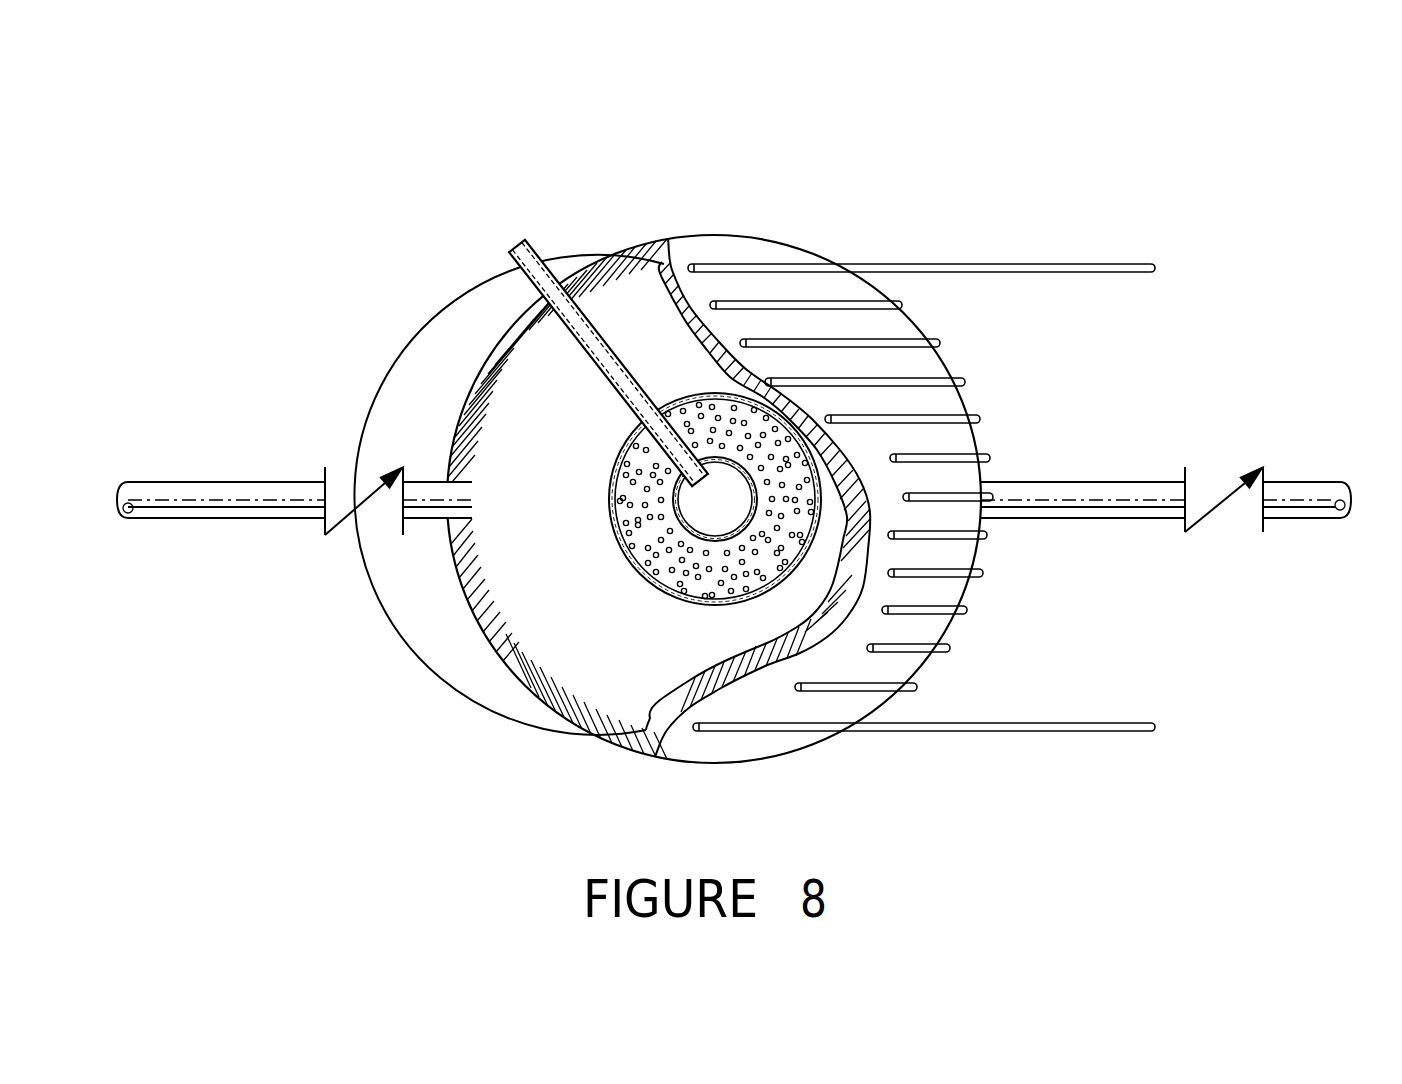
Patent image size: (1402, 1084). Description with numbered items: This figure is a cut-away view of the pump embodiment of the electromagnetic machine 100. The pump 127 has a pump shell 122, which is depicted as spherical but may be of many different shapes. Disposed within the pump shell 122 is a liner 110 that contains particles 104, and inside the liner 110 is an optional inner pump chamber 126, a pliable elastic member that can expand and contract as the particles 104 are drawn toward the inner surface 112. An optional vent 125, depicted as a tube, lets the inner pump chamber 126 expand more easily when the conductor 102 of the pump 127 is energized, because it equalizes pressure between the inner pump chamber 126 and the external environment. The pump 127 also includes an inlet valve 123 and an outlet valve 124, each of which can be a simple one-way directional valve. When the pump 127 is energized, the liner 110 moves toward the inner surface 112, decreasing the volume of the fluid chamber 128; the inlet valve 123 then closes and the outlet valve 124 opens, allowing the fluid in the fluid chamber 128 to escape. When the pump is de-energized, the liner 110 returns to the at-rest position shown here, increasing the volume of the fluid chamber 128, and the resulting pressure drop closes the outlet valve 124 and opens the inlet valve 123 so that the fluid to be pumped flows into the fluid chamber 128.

The electromagnetic machine 100 is at (1002, 162).
The conductor 102 is at (930, 578).
The particles 104 is at (652, 518).
The liner 110 is at (612, 468).
The inner surface 112 is at (560, 686).
The pump shell 122 is at (962, 396).
The inlet valve 123 is at (352, 473).
The outlet valve 124 is at (1220, 460).
The vent 125 is at (545, 260).
The inner pump chamber 126 is at (707, 510).
The pump 127 is at (628, 247).
The fluid chamber 128 is at (503, 534).